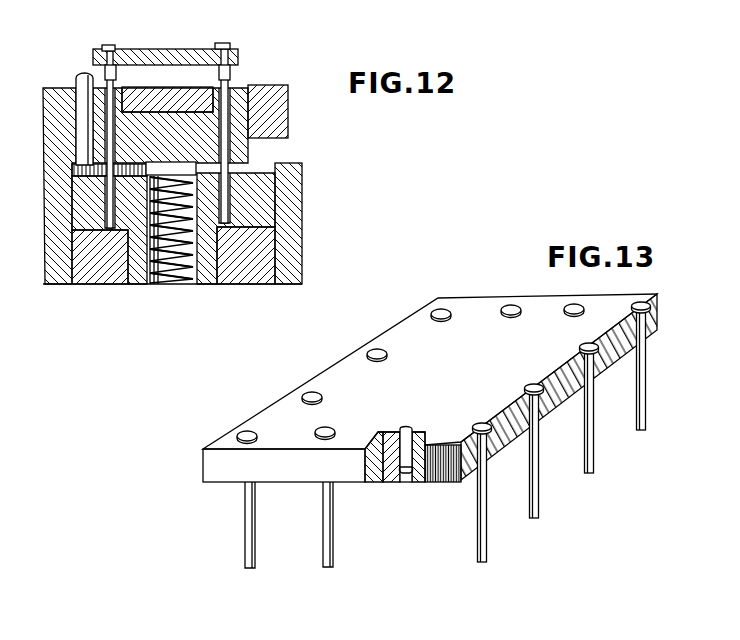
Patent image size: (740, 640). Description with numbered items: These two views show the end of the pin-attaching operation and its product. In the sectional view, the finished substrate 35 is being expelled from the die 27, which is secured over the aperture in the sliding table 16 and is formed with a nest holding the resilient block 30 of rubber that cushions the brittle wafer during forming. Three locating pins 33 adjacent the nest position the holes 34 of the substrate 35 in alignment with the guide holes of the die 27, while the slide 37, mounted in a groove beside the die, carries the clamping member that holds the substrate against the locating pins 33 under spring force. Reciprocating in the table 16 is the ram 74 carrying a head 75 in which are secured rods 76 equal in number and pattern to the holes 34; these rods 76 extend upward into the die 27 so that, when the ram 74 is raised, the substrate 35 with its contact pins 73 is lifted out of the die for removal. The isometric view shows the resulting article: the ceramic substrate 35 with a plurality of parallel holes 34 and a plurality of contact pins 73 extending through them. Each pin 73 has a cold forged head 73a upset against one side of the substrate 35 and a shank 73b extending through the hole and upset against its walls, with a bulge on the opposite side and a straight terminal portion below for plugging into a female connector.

In FIG. 12, the table 16 is at (294, 232).
In FIG. 12, the die 27 is at (51, 140).
In FIG. 12, the resilient block 30 is at (150, 87).
In FIG. 12, the locating pins 33 is at (75, 77).
In FIG. 13, the substrate holes 34 is at (407, 427).
In FIG. 12, the substrate 35 is at (170, 49).
In FIG. 13, the substrate 35 is at (268, 417).
In FIG. 12, the slide 37 is at (279, 112).
In FIG. 12, the contact pins 73 is at (229, 78).
In FIG. 13, the contact pins 73 is at (538, 438).
In FIG. 13, the cold forged head 73a is at (497, 313).
In FIG. 13, the shank 73b is at (638, 348).
In FIG. 12, the ram 74 is at (260, 273).
In FIG. 12, the head 75 is at (266, 203).
In FIG. 12, the rods 76 is at (236, 169).